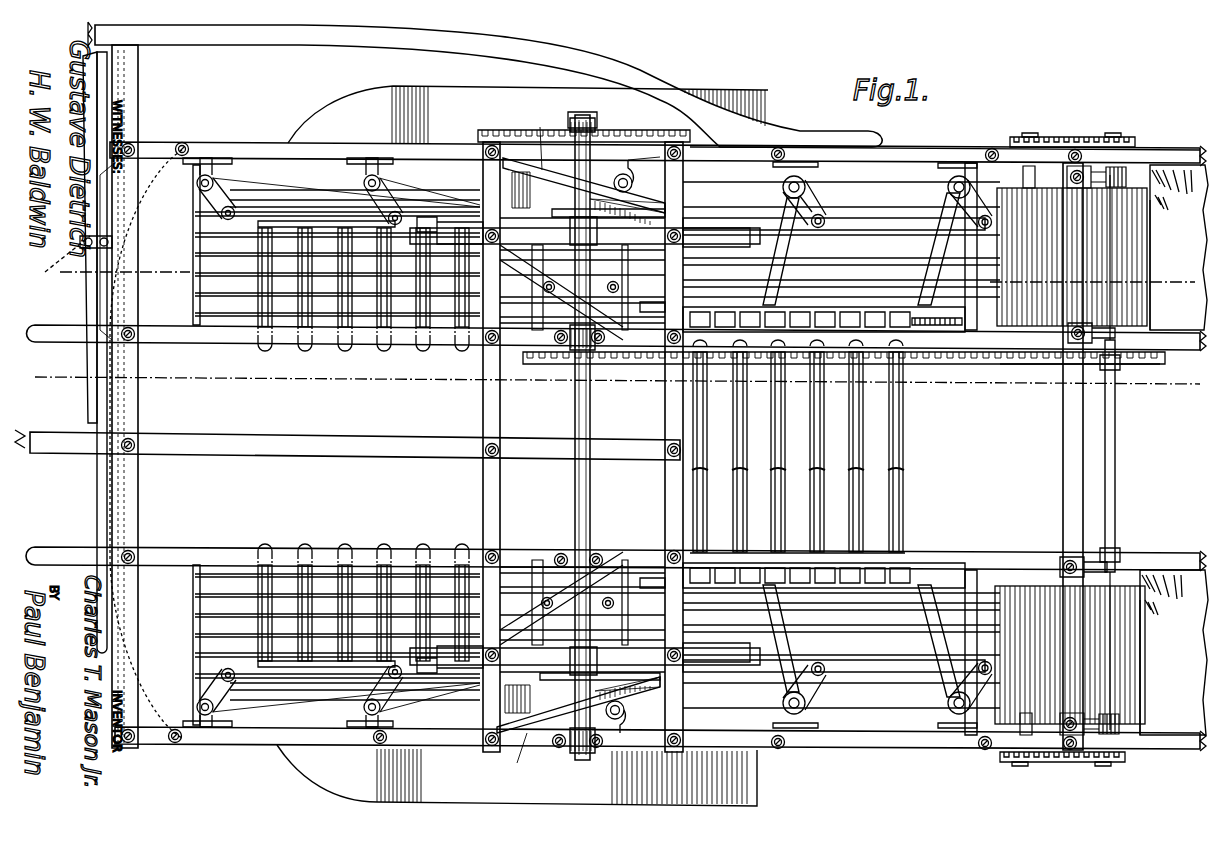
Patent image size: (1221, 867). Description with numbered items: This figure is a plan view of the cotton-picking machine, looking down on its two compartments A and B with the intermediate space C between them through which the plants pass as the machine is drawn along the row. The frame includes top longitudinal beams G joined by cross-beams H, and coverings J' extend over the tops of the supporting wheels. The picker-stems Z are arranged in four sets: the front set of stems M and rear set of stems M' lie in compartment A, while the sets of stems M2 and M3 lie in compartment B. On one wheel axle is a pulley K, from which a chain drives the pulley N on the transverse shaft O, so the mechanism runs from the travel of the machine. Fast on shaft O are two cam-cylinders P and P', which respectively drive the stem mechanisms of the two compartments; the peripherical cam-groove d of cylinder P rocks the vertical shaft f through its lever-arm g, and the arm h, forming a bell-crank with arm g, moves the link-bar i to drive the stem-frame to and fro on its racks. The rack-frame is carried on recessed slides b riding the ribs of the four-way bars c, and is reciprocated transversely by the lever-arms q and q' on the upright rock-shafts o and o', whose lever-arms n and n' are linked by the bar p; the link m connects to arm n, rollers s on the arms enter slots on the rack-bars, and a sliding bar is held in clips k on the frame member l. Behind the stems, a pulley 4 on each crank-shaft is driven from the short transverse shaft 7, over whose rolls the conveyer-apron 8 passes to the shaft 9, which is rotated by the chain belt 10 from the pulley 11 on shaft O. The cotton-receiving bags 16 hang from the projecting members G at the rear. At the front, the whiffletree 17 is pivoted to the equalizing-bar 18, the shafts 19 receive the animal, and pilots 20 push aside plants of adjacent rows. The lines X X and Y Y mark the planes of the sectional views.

The shafts 19 is at (448, 241).
The pilots 20 is at (141, 444).
The whiffletree 17 is at (78, 237).
The equalizing-bar 18 is at (89, 352).
The pulley 4 is at (1067, 451).
The short transverse shaft 7 is at (1073, 450).
The conveyer-apron 8 is at (1071, 456).
The shaft 9 is at (1114, 452).
The chain belt 10 is at (1080, 367).
The pulley 11 is at (844, 365).
The cotton-receiving bags 16 is at (1161, 467).
The cross-beams H is at (616, 398).
The top longitudinal beams G is at (945, 139).
The compartment A is at (1179, 247).
The compartment B is at (1174, 652).
The intermediate space C is at (1156, 459).
The pulley K is at (584, 126).
The pulley N is at (590, 123).
The transverse shaft O is at (579, 437).
The cam-cylinder P is at (584, 191).
The cam-cylinder P' is at (578, 703).
The coverings J' is at (522, 446).
The set of picker-stems M is at (353, 296).
The set of picker-stems M2 is at (362, 591).
The set of picker-stems M' is at (875, 446).
The set of picker-stems M3 is at (875, 538).
The peripherical cam-groove d is at (523, 441).
The vertical rock-shaft f is at (644, 163).
The lever-arm g is at (615, 446).
The lever-arm h is at (575, 445).
The link-bar i is at (561, 445).
The clips k is at (580, 438).
The four-way bars c is at (628, 445).
The recessed slides b is at (647, 444).
The frame member l is at (471, 445).
The bar p is at (834, 436).
The lever-arm q is at (781, 445).
The lever-arm q' is at (939, 445).
The upright rock-shaft o is at (804, 439).
The upright rock-shaft o' is at (964, 442).
The lever-arm n is at (806, 204).
The lever-arm n' is at (985, 435).
The link m is at (810, 445).
The rollers s is at (824, 447).
The picker-stems z is at (515, 442).
The section line X X is at (618, 381).
The section line Y Y is at (626, 278).